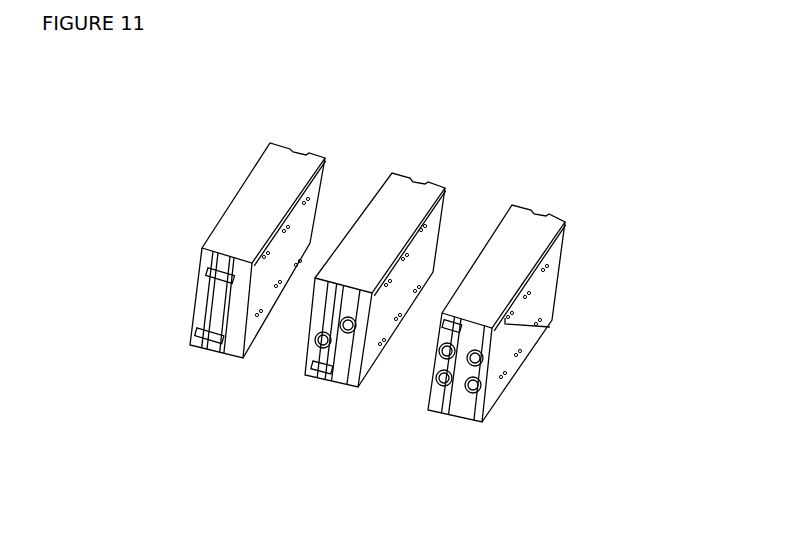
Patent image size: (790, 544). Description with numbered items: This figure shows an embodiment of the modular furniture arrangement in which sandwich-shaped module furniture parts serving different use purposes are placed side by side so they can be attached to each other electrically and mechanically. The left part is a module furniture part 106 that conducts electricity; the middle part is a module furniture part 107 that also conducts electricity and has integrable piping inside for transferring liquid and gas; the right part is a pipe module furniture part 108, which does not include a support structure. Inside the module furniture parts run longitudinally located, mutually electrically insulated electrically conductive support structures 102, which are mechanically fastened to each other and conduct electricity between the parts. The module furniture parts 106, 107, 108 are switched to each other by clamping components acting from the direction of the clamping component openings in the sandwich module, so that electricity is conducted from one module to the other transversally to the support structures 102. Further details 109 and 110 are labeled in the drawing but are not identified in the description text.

The electrically conductive supporting structure 102 is at (237, 274).
The module furniture part conducting electricity 106 is at (250, 218).
The module furniture part with integrable piping 107 is at (398, 215).
The pipe module furniture part 108 is at (525, 237).
The connector holes 109 is at (438, 343).
The side holes 110 is at (545, 265).